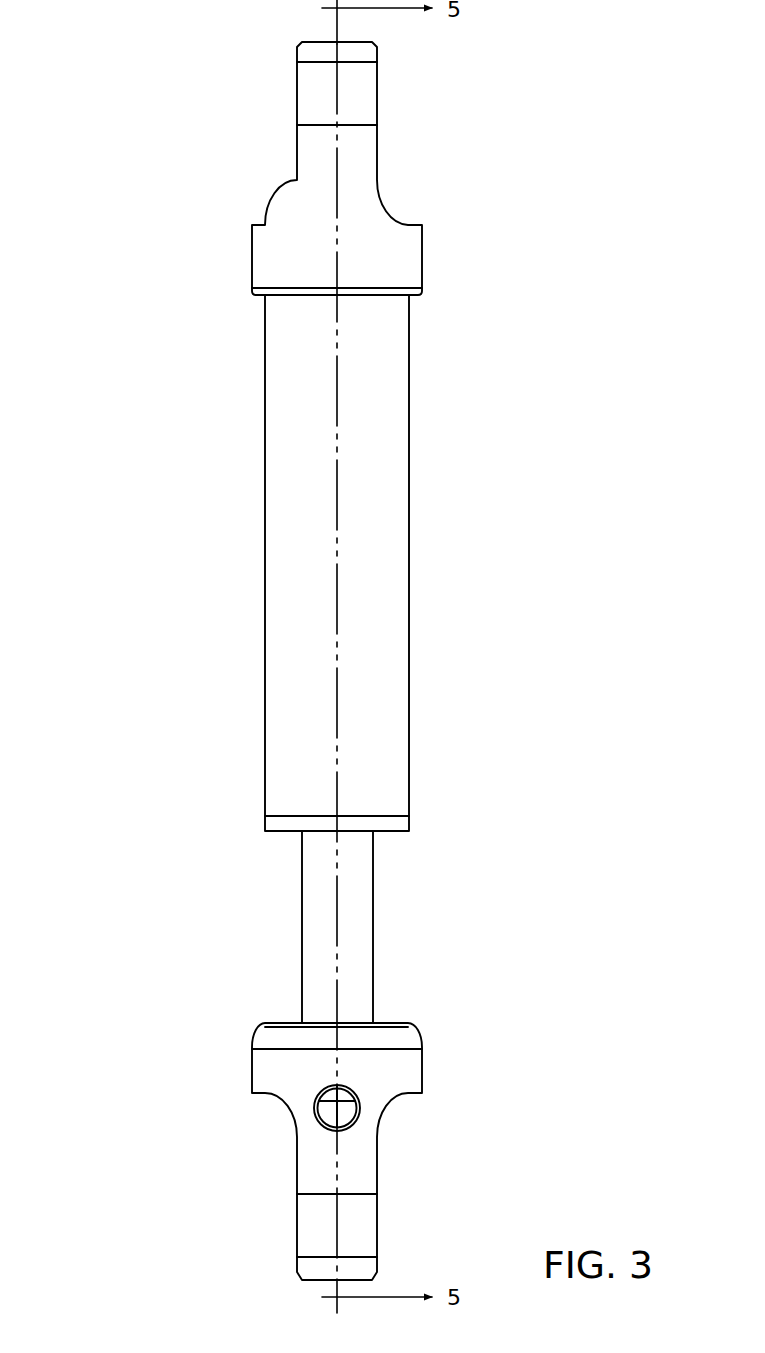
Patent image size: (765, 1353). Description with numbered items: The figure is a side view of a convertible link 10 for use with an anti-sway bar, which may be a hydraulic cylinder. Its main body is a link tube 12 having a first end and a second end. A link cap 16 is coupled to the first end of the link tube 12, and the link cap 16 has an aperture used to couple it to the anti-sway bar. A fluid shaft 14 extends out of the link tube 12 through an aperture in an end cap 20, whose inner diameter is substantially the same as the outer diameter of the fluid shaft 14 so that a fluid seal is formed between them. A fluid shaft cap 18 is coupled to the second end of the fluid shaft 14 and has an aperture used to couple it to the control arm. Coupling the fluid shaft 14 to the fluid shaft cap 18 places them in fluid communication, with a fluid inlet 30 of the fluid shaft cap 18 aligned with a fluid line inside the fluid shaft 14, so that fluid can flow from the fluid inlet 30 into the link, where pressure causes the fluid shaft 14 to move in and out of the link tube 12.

The convertible link 10 is at (153, 118).
The link tube 12 is at (300, 531).
The fluid shaft 14 is at (318, 923).
The link cap 16 is at (380, 240).
The fluid shaft cap 18 is at (395, 1065).
The end cap 20 is at (385, 825).
The fluid inlet 30 is at (322, 1120).